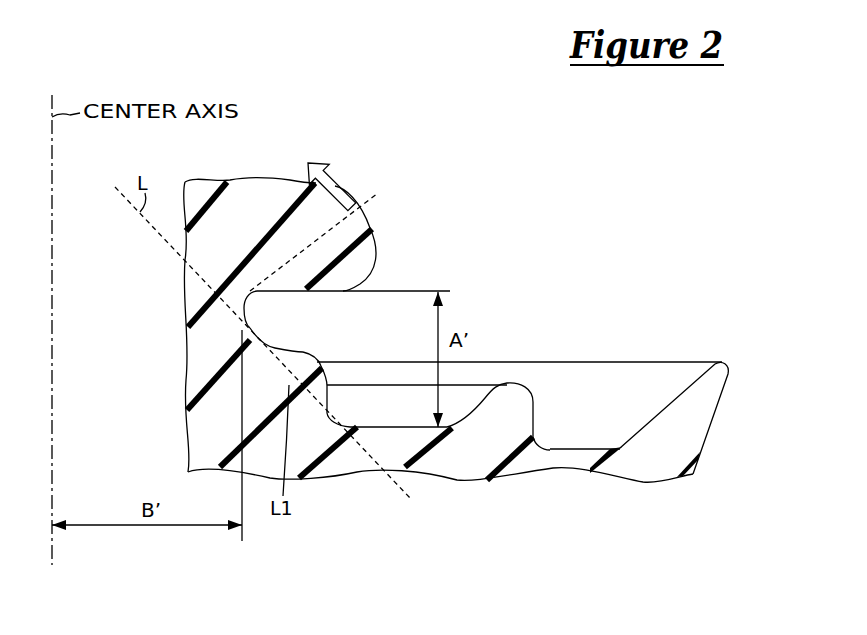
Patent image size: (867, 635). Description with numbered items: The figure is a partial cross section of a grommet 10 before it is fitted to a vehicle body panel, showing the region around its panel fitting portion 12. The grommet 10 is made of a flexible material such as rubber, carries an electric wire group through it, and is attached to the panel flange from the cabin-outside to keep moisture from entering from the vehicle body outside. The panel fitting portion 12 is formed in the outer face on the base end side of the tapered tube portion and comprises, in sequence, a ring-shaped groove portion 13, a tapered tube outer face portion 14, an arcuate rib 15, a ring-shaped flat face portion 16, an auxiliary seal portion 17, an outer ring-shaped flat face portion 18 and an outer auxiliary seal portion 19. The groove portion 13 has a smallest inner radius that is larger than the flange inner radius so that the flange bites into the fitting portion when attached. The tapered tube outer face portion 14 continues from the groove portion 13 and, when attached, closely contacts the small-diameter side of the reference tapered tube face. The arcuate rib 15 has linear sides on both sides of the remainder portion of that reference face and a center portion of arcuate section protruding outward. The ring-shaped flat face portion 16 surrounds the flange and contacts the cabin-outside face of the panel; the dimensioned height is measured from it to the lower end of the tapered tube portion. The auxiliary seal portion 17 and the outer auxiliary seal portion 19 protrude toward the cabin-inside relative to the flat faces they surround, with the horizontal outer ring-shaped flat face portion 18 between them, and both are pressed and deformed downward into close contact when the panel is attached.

The grommet 10 is at (523, 205).
The panel fitting portion 12 is at (537, 260).
The ring-shaped groove portion 13 is at (257, 313).
The tapered tube outer face portion 14 is at (243, 327).
The arcuate rib 15 is at (292, 358).
The ring-shaped flat face portion 16 is at (405, 438).
The auxiliary seal portion 17 is at (517, 402).
The outer ring-shaped flat face portion 18 is at (581, 450).
The outer auxiliary seal portion 19 is at (718, 378).